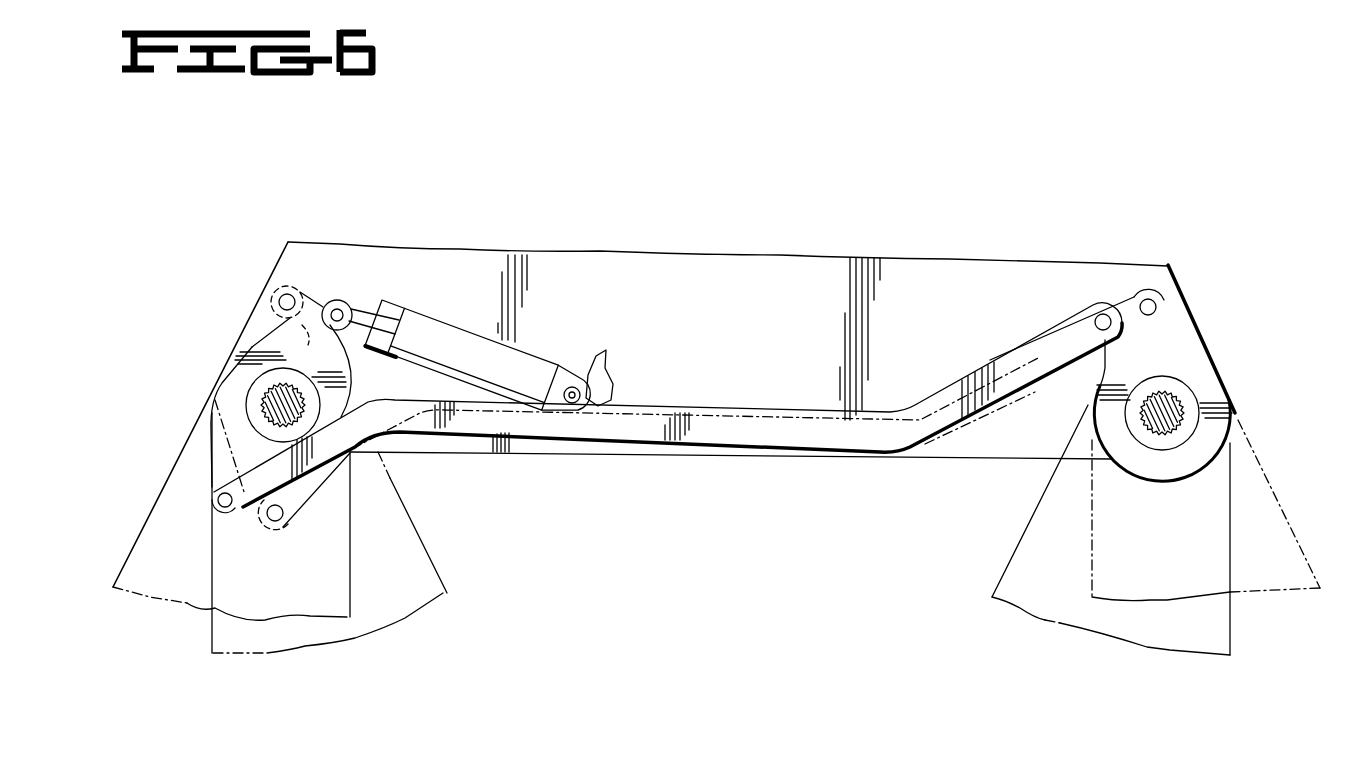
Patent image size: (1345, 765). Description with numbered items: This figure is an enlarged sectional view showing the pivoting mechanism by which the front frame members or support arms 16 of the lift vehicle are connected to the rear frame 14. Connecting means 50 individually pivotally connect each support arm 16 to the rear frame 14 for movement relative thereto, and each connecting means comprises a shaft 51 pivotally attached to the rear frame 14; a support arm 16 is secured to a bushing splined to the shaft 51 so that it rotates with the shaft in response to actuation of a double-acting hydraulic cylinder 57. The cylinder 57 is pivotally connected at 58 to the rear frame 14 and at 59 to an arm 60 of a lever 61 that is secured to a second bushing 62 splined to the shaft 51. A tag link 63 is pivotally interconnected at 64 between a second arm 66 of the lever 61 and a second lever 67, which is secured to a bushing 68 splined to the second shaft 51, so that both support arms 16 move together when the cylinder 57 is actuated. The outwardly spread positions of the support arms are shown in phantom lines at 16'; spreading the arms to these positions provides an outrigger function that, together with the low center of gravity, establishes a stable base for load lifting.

The rear frame 14 is at (728, 352).
The front frame member 16 is at (721, 553).
The phantom-line position of support arm 16' is at (716, 636).
The connecting means 50 is at (240, 392).
The shaft 51 is at (266, 400).
The double-acting hydraulic cylinder 57 is at (448, 332).
The pivotal connection to rear frame 58 is at (580, 387).
The pivotal connection to lever arm 59 is at (340, 307).
The arm 60 is at (305, 326).
The lever 61 is at (252, 350).
The second bushing 62 is at (214, 440).
The tag link 63 is at (944, 396).
The pivotal connection of tag link 64 is at (213, 512).
The second arm 66 is at (217, 473).
The second lever 67 is at (1140, 330).
The bushing 68 is at (1191, 436).